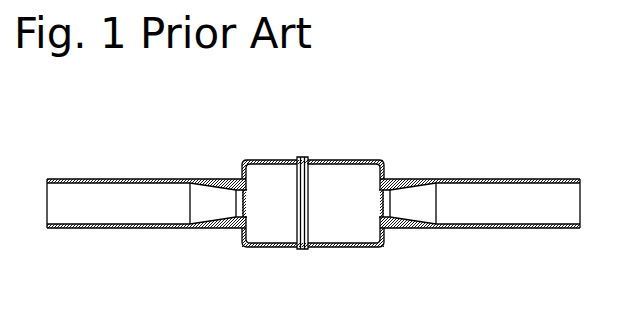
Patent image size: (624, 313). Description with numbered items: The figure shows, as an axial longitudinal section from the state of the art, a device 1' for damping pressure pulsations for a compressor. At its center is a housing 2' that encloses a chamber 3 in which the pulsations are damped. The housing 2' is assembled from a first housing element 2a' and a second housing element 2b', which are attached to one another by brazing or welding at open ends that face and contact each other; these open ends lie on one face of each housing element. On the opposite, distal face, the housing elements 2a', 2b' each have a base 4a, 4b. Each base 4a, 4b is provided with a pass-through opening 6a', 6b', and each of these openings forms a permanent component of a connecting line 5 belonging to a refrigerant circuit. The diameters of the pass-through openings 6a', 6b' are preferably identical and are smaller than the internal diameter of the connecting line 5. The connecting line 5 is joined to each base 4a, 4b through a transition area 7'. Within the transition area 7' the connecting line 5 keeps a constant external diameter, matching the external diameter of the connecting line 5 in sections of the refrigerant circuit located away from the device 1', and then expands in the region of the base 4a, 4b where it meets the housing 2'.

The device for damping pressure pulsations 1' is at (316, 179).
The housing 2' is at (313, 225).
The first housing element 2a' is at (268, 171).
The second housing element 2b' is at (346, 171).
The chamber 3 is at (327, 205).
The base 4a is at (218, 205).
The base 4b is at (410, 205).
The connecting line 5 is at (85, 178).
The pass-through opening 6a' is at (213, 161).
The pass-through opening 6b' is at (408, 161).
The transition area 7' is at (313, 161).